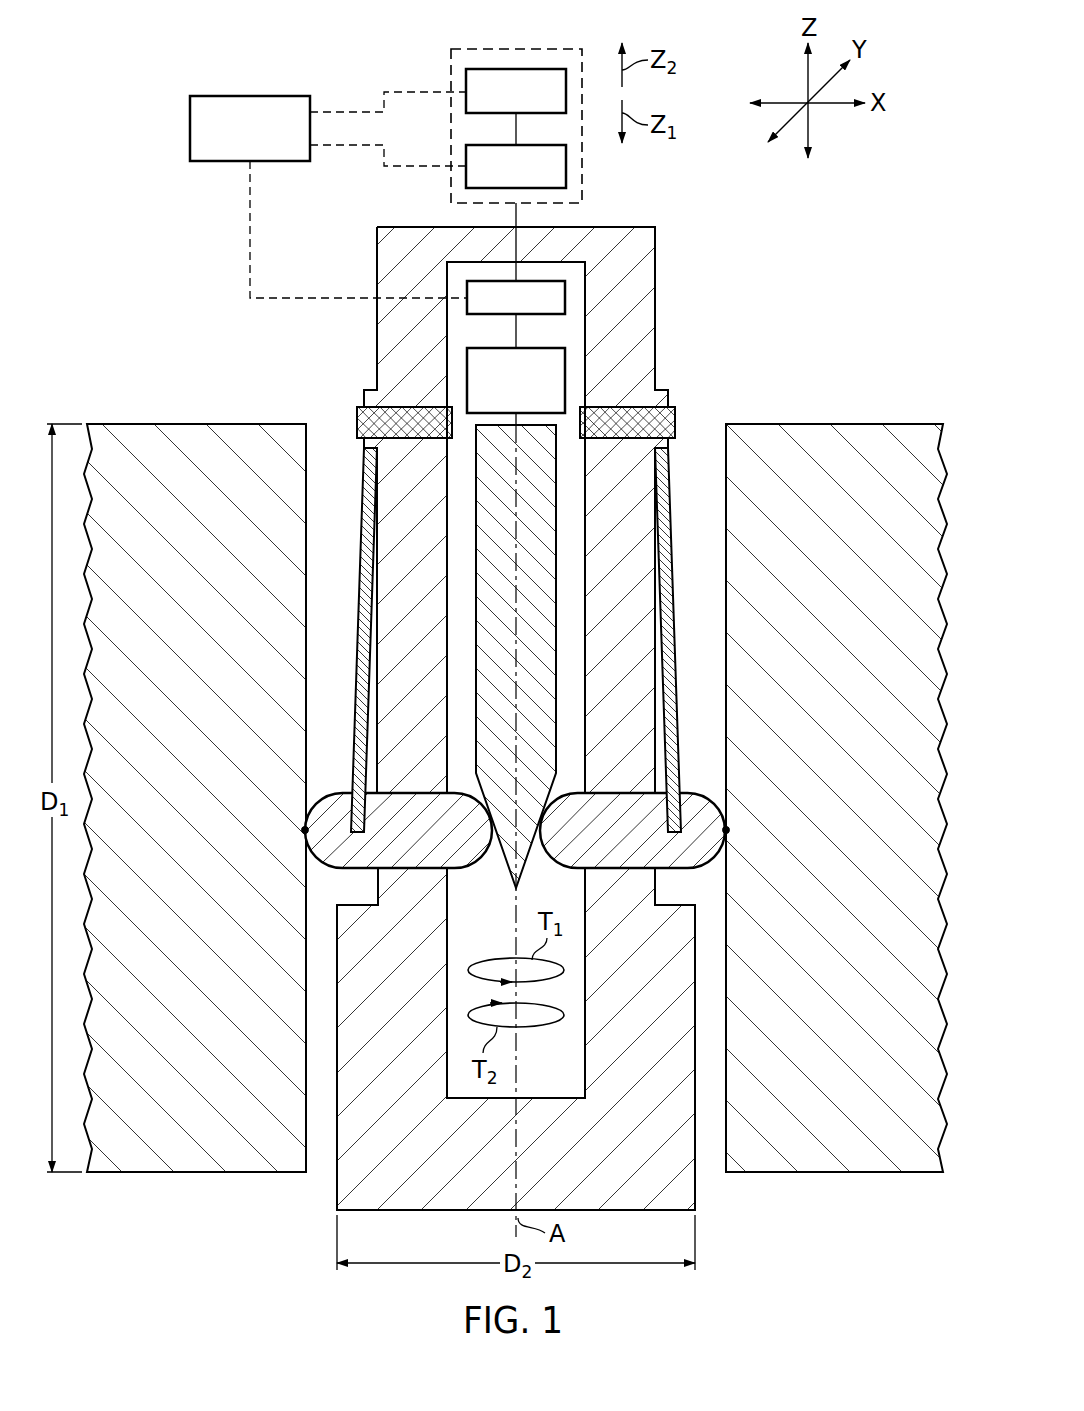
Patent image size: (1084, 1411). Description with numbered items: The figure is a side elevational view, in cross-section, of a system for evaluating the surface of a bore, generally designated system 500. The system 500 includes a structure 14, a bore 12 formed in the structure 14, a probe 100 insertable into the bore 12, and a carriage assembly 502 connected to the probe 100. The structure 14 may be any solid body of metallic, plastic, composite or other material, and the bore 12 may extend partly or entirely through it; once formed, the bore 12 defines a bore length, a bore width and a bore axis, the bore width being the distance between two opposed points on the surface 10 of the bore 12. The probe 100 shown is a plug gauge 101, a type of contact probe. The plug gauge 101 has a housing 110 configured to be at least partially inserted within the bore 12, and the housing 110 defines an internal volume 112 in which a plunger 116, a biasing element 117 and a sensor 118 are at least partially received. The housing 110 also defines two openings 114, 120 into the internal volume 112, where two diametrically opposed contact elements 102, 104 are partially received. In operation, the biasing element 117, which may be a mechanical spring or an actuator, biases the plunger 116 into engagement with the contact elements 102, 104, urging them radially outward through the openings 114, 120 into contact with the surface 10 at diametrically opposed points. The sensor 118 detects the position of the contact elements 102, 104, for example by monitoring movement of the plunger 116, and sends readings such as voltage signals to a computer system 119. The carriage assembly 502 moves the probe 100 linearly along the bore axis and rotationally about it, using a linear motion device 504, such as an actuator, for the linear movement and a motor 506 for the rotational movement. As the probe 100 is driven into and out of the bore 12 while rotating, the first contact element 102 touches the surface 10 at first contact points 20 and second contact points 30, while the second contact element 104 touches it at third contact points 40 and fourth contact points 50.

The surface of the bore 10 is at (307, 437).
The bore 12 is at (697, 424).
The structure 14 is at (830, 424).
The first contact points 20 is at (305, 830).
The second contact points 30 is at (273, 845).
The third contact points 40 is at (726, 830).
The fourth contact points 50 is at (780, 845).
The probe 100 is at (655, 265).
The plug gauge 101 is at (568, 510).
The first contact element 102 is at (323, 808).
The second contact element 104 is at (710, 808).
The housing 110 is at (645, 314).
The internal volume 112 is at (580, 375).
The first opening 114 is at (396, 788).
The plunger 116 is at (547, 488).
The biasing element 117 is at (467, 378).
The sensor 118 is at (467, 298).
The computer system 119 is at (245, 95).
The second opening 120 is at (603, 788).
The system for evaluating the surface of a bore 500 is at (887, 240).
The carriage assembly 502 is at (451, 52).
The linear motion device 504 is at (542, 107).
The motor 506 is at (542, 182).